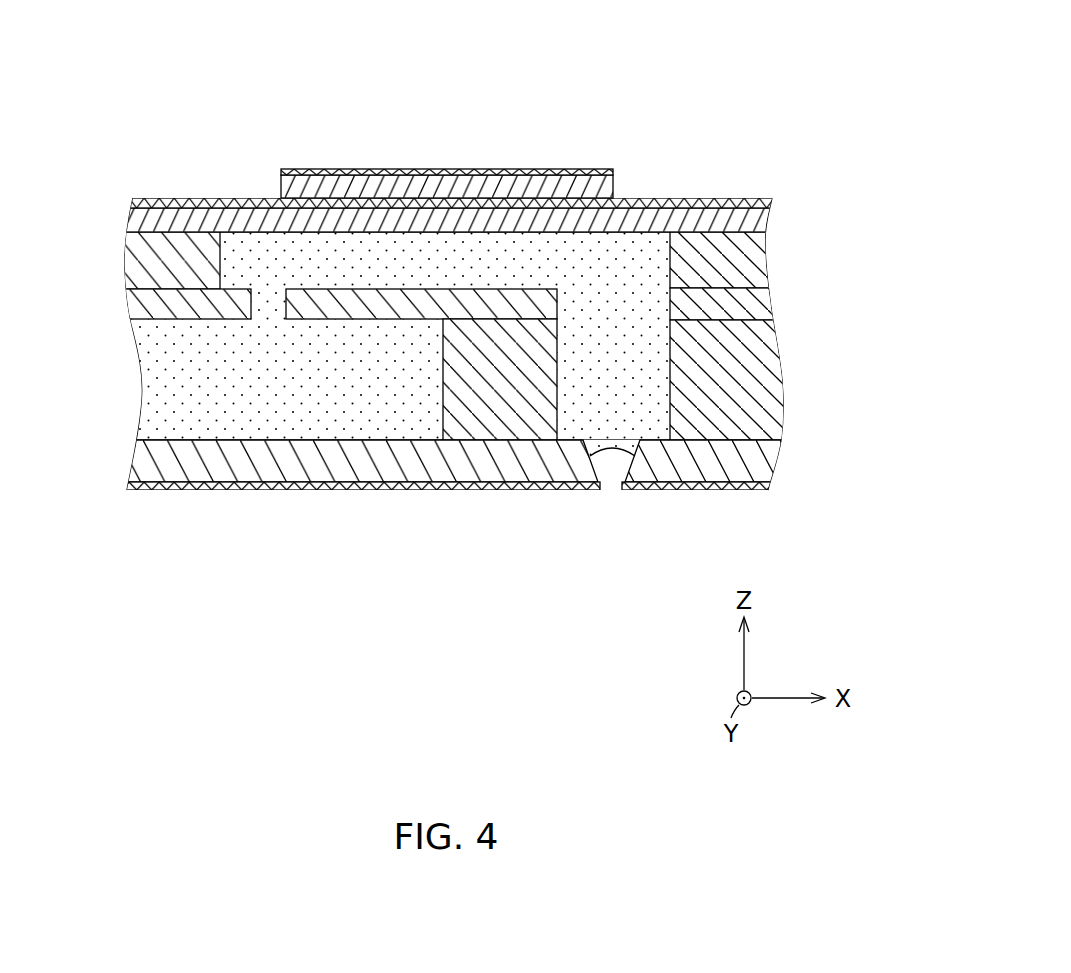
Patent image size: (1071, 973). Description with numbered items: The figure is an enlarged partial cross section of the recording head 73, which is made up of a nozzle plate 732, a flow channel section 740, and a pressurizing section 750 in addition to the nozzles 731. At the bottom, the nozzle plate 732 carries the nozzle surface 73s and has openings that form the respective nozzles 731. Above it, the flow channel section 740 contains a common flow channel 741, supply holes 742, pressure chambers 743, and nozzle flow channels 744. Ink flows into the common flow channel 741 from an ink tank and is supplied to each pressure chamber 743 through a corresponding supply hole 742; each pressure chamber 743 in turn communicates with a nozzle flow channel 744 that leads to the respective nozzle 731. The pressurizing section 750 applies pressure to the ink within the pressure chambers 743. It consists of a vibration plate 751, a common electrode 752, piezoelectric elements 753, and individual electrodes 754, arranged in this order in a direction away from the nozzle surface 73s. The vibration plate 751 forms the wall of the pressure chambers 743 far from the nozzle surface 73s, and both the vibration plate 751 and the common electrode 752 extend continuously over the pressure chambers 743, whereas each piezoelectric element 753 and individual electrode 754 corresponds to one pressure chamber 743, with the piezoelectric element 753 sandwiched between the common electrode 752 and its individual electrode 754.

The recording head 73 is at (680, 102).
The nozzle 731 is at (620, 470).
The nozzle plate 732 is at (757, 458).
The nozzle surface 73s is at (289, 497).
The flow channel section 740 is at (88, 330).
The common flow channel 741 is at (205, 405).
The supply hole 742 is at (274, 326).
The pressure chamber 743 is at (537, 261).
The nozzle flow channel 744 is at (642, 358).
The pressurizing section 750 is at (503, 174).
The vibration plate 751 is at (773, 214).
The common electrode 752 is at (772, 203).
The piezoelectric element 753 is at (615, 192).
The individual electrode 754 is at (615, 173).